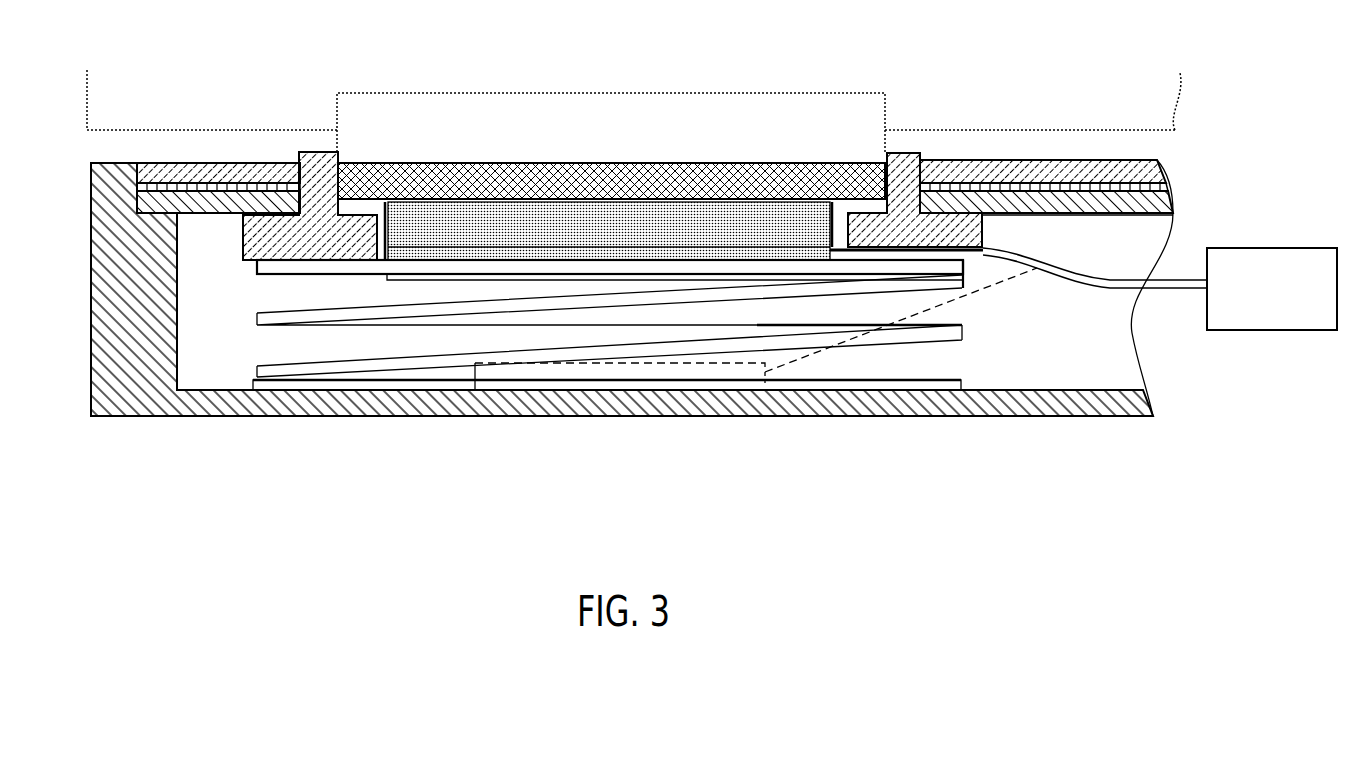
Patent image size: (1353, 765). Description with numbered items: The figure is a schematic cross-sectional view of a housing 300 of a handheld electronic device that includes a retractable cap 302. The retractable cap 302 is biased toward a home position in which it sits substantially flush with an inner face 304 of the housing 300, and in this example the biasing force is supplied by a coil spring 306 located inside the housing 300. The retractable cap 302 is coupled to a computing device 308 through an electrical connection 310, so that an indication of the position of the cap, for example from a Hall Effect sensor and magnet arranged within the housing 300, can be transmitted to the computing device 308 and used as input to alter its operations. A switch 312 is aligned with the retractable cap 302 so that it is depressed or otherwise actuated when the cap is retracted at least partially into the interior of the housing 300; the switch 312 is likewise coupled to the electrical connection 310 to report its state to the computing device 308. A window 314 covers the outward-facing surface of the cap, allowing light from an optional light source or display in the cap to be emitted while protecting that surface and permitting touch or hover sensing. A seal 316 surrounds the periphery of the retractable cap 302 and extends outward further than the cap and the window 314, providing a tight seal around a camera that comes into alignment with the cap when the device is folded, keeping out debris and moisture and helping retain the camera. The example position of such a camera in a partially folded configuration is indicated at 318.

The housing 300 is at (330, 427).
The retractable cap 302 is at (762, 193).
The inner face 304 is at (170, 162).
The coil spring 306 is at (960, 340).
The computing device 308 is at (1272, 289).
The electrical connection 310 is at (1083, 275).
The switch 312 is at (745, 370).
The window 314 is at (598, 158).
The seal 316 is at (907, 150).
The camera position 318 is at (455, 110).